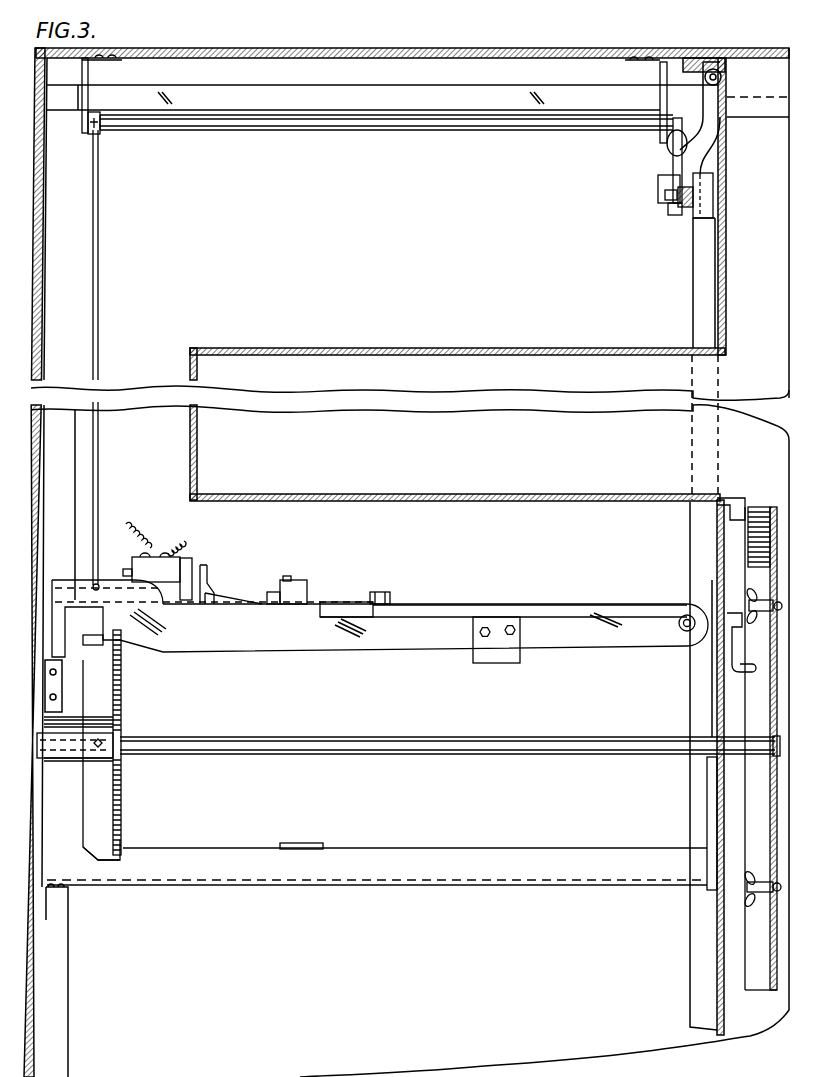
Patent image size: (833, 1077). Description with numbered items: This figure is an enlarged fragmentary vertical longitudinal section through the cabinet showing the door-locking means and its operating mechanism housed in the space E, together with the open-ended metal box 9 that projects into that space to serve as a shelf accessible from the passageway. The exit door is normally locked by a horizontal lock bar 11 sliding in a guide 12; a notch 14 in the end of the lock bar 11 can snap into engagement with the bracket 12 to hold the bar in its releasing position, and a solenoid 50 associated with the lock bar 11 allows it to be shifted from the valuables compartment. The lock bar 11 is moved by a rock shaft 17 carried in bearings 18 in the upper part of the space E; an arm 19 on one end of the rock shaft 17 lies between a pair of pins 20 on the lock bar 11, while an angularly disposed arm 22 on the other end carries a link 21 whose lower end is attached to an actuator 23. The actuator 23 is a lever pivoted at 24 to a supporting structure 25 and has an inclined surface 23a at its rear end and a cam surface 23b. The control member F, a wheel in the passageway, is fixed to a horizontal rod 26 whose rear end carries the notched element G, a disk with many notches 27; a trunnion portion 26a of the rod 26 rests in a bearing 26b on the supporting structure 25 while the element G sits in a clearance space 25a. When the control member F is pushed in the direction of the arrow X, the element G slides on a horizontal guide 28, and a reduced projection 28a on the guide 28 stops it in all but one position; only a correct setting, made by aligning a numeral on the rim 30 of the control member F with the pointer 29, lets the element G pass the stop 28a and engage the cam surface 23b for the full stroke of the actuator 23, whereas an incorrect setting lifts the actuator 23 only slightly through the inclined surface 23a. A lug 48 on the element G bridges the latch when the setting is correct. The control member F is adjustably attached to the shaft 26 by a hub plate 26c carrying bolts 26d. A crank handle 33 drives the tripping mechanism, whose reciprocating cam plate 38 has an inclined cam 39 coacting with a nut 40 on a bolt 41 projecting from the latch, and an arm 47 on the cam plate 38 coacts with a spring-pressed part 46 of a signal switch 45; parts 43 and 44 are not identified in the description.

The open-ended metal box 9 is at (198, 446).
The lock bar 11 is at (695, 215).
The guide 12 is at (660, 188).
The notch 14 is at (673, 212).
The rock shaft 17 is at (366, 132).
The bearings 18 is at (89, 92).
The arm 19 is at (675, 160).
The laterally-projecting pins 20 is at (668, 200).
The link 21 is at (99, 300).
The angularly-disposed arm 22 is at (95, 135).
The actuator 23 is at (277, 652).
The inclined surface 23a is at (145, 654).
The cam surface 23b is at (466, 656).
The pivot 24 is at (681, 616).
The supporting structure 25 is at (456, 612).
The clearance space 25a is at (98, 856).
The rod or shaft 26 is at (432, 755).
The trunnion portion 26a is at (58, 750).
The bearing 26b is at (72, 748).
The hub plate 26c is at (770, 800).
The bolts 26d is at (752, 898).
The notches 27 is at (119, 826).
The guide 28 is at (192, 850).
The reduced projection 28a is at (300, 845).
The pointer 29 is at (740, 498).
The rim 30 is at (752, 992).
The crank handle 33 is at (733, 615).
The cam plate 38 is at (393, 600).
The inclined portion or cam 39 is at (240, 596).
The nut 40 is at (272, 592).
The bolt 41 is at (287, 576).
The block 43 is at (300, 580).
The plate 44 is at (340, 610).
The signal switch 45 is at (158, 558).
The spring-pressed switch part 46 is at (188, 562).
The arm 47 is at (206, 580).
The lug 48 is at (85, 640).
The solenoid 50 is at (668, 143).
The space E is at (297, 261).
The control member F is at (750, 715).
The notched element G is at (121, 797).
The arrow X is at (222, 719).